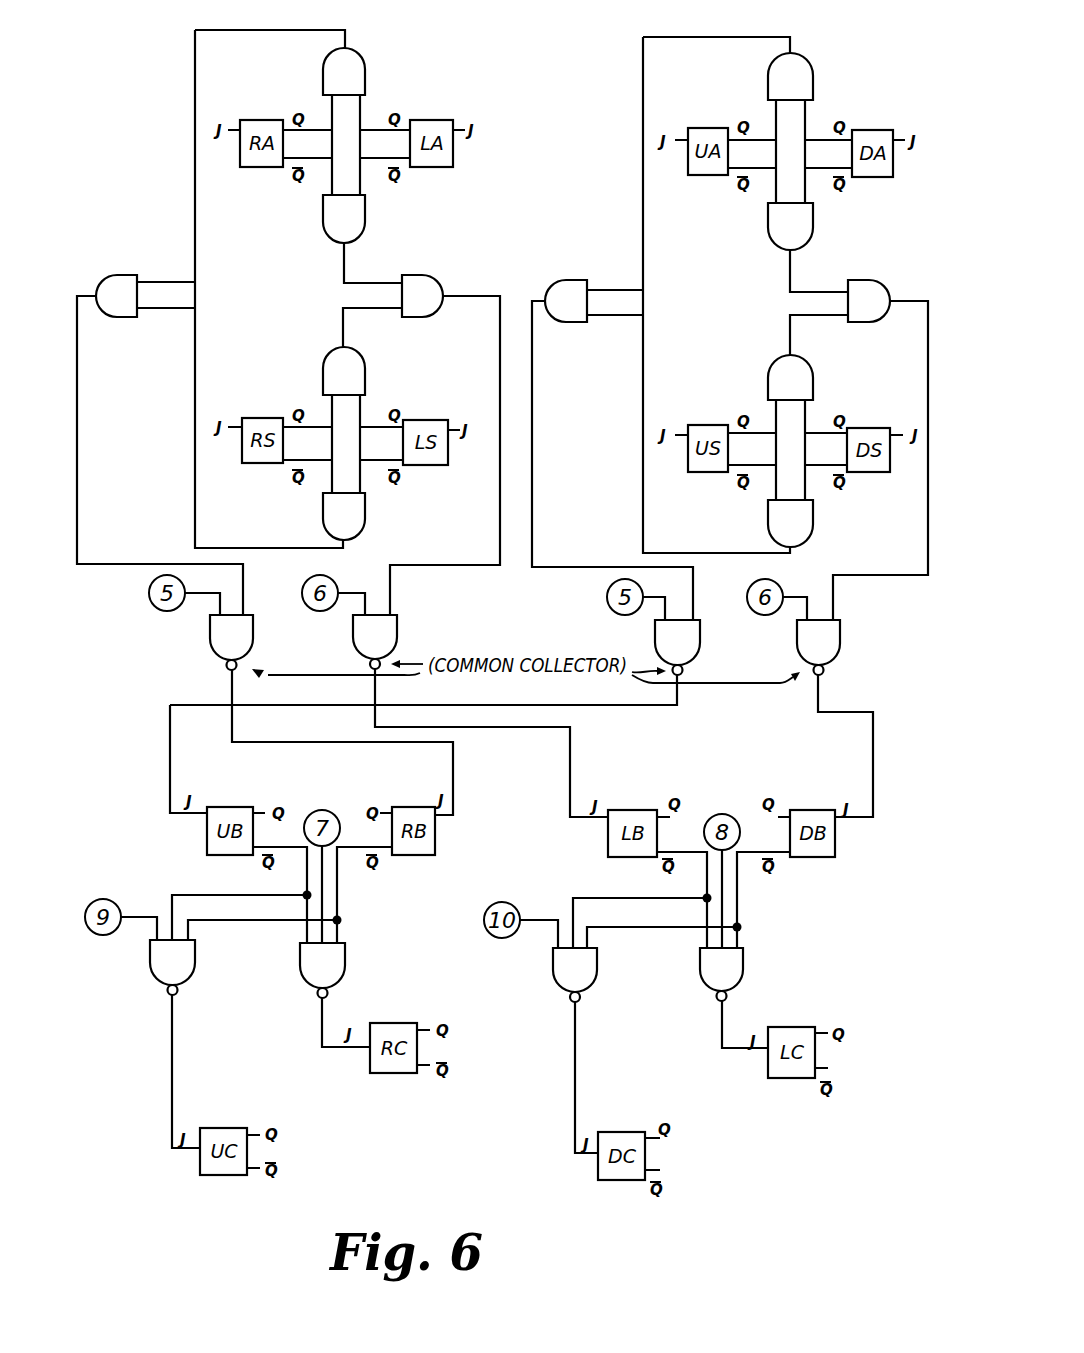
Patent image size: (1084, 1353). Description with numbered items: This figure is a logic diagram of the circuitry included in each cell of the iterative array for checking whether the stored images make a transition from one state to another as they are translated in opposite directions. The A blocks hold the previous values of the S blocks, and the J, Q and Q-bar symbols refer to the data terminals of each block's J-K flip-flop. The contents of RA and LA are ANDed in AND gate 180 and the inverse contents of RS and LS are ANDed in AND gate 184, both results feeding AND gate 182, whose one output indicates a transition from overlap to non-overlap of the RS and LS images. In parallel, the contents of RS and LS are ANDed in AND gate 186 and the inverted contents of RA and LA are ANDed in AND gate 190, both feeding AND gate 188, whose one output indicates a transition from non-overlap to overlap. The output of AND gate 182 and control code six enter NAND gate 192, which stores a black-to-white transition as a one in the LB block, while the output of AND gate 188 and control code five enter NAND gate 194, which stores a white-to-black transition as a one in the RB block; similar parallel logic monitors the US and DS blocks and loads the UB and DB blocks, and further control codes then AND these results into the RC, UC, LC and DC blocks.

The AND gate 180 is at (366, 226).
The AND gate 182 is at (425, 276).
The AND gate 184 is at (366, 363).
The AND gate 186 is at (366, 518).
The AND gate 188 is at (100, 318).
The AND gate 190 is at (368, 66).
The NAND gate 192 is at (397, 638).
The NAND gate 194 is at (253, 638).